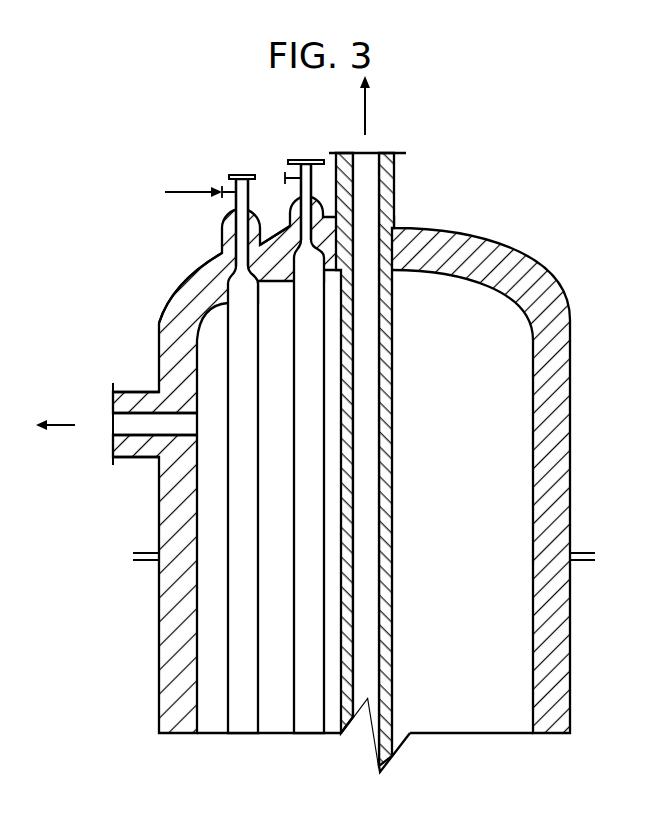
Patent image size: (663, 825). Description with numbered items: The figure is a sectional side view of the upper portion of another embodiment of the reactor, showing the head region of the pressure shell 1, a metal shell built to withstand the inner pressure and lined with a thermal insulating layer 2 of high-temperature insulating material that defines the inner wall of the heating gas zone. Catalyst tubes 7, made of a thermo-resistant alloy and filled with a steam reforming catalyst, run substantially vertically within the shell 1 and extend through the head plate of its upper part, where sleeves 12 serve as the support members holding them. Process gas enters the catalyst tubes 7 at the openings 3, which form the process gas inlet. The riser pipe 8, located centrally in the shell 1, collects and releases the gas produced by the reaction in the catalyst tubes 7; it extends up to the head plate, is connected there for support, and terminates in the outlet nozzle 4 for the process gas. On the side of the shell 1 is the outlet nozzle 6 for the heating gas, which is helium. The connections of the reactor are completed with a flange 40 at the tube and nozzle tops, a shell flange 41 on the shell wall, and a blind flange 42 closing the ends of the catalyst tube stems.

The pressure shell 1 is at (172, 300).
The thermal insulating layer 2 is at (562, 483).
The inlet nozzle 3 is at (222, 187).
The outlet nozzle 4 is at (370, 172).
The outlet nozzle 6 is at (120, 430).
The catalyst tubes 7 is at (234, 379).
The riser pipe 8 is at (372, 440).
The sleeves 12 is at (264, 214).
The flange 40 is at (229, 175).
The shell flange 41 is at (150, 553).
The blind flange 42 is at (236, 173).